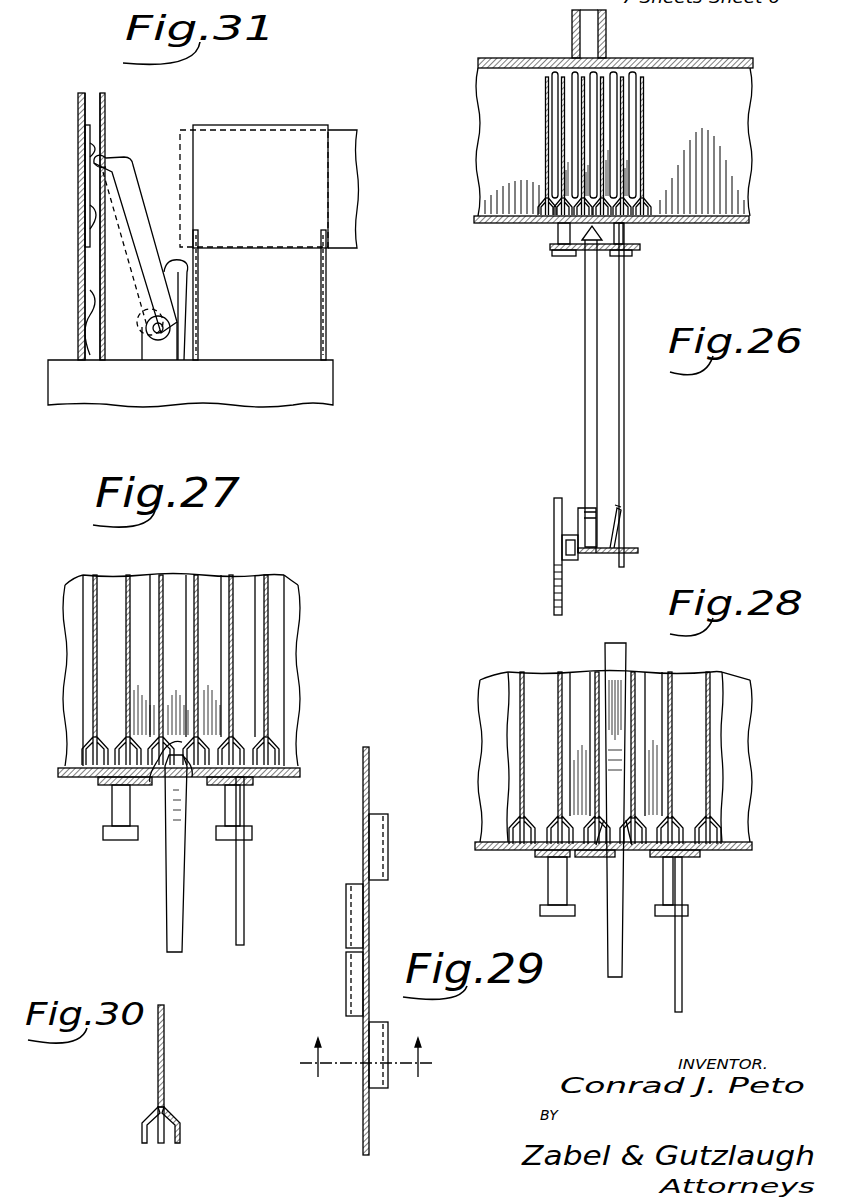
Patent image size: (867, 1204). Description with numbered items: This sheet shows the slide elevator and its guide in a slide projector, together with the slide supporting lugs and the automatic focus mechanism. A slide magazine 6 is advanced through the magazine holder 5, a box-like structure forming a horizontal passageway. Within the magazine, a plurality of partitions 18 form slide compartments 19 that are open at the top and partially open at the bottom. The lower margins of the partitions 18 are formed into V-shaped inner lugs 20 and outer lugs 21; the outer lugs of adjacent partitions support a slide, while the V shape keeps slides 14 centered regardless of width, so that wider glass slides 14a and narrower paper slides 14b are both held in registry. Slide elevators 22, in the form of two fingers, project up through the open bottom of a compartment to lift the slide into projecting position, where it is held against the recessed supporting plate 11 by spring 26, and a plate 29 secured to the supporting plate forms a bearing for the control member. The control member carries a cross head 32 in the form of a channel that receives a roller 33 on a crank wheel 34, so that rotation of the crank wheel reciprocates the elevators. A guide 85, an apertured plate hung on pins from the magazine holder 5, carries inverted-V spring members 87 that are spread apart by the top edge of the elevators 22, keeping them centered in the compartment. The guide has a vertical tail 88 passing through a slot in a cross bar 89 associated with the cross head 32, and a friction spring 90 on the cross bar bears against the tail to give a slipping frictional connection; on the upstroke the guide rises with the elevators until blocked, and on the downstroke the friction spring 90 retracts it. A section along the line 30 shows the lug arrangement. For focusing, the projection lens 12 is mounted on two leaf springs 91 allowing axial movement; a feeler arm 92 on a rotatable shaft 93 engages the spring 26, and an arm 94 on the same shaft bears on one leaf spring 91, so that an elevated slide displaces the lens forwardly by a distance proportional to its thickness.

In FIG. 26, the magazine holder 5 is at (494, 59).
In FIG. 28, the magazine holder 5 is at (492, 700).
In FIG. 26, the slide magazine 6 is at (492, 112).
In FIG. 28, the slide magazine 6 is at (716, 802).
In FIG. 31, the supporting plate 11 is at (79, 293).
In FIG. 26, the supporting plate 11 is at (607, 33).
In FIG. 31, the projection lens 12 is at (273, 142).
In FIG. 31, the slide 14 is at (86, 199).
In FIG. 26, the glass slides 14a is at (593, 135).
In FIG. 27, the glass slides 14a is at (176, 585).
In FIG. 28, the glass slides 14a is at (594, 648).
In FIG. 26, the paper slides 14b is at (556, 159).
In FIG. 27, the paper slides 14b is at (207, 585).
In FIG. 28, the paper slides 14b is at (657, 682).
In FIG. 26, the partitions 18 is at (627, 138).
In FIG. 27, the partitions 18 is at (232, 696).
In FIG. 28, the partitions 18 is at (710, 782).
In FIG. 29, the partitions 18 is at (370, 776).
In FIG. 30, the partitions 18 is at (165, 1056).
In FIG. 27, the slide compartments 19 is at (246, 590).
In FIG. 28, the slide compartments 19 is at (693, 735).
In FIG. 27, the inner lugs 20 is at (92, 742).
In FIG. 28, the inner lugs 20 is at (549, 824).
In FIG. 29, the inner lugs 20 is at (344, 964).
In FIG. 30, the inner lugs 20 is at (145, 1124).
In FIG. 27, the outer lugs 21 is at (268, 742).
In FIG. 28, the outer lugs 21 is at (710, 818).
In FIG. 29, the outer lugs 21 is at (389, 866).
In FIG. 30, the outer lugs 21 is at (177, 1120).
In FIG. 26, the slide elevators 22 is at (585, 354).
In FIG. 27, the slide elevators 22 is at (167, 878).
In FIG. 28, the slide elevators 22 is at (622, 941).
In FIG. 31, the spring 26 is at (88, 222).
In FIG. 28, the plate 29 is at (490, 780).
In FIG. 29, the section line 30 is at (363, 1057).
In FIG. 26, the cross head 32 is at (577, 530).
In FIG. 26, the roller 33 is at (564, 546).
In FIG. 26, the crank wheel 34 is at (555, 581).
In FIG. 26, the guide 85 is at (554, 246).
In FIG. 27, the guide 85 is at (102, 778).
In FIG. 28, the guide 85 is at (540, 852).
In FIG. 26, the spring members 87 is at (598, 228).
In FIG. 27, the spring members 87 is at (158, 780).
In FIG. 28, the spring members 87 is at (598, 848).
In FIG. 26, the tail 88 is at (625, 450).
In FIG. 27, the tail 88 is at (246, 892).
In FIG. 28, the tail 88 is at (683, 938).
In FIG. 26, the cross bar 89 is at (638, 550).
In FIG. 26, the friction spring 90 is at (620, 530).
In FIG. 31, the leaf springs 91 is at (198, 296).
In FIG. 31, the feeler arm 92 is at (133, 198).
In FIG. 31, the rotatable shaft 93 is at (163, 328).
In FIG. 31, the arm 94 is at (189, 273).